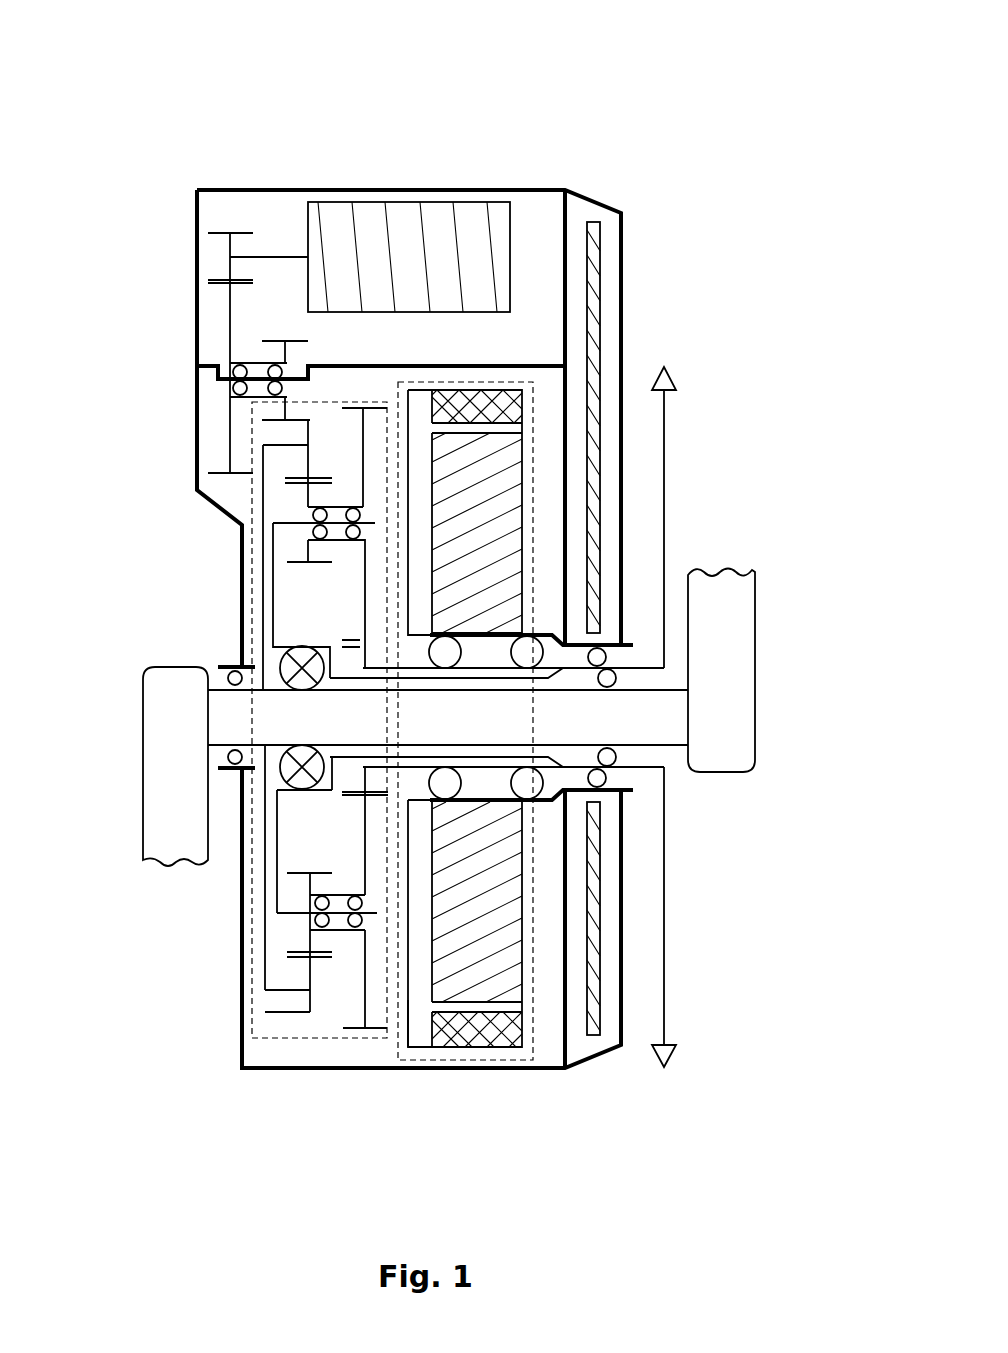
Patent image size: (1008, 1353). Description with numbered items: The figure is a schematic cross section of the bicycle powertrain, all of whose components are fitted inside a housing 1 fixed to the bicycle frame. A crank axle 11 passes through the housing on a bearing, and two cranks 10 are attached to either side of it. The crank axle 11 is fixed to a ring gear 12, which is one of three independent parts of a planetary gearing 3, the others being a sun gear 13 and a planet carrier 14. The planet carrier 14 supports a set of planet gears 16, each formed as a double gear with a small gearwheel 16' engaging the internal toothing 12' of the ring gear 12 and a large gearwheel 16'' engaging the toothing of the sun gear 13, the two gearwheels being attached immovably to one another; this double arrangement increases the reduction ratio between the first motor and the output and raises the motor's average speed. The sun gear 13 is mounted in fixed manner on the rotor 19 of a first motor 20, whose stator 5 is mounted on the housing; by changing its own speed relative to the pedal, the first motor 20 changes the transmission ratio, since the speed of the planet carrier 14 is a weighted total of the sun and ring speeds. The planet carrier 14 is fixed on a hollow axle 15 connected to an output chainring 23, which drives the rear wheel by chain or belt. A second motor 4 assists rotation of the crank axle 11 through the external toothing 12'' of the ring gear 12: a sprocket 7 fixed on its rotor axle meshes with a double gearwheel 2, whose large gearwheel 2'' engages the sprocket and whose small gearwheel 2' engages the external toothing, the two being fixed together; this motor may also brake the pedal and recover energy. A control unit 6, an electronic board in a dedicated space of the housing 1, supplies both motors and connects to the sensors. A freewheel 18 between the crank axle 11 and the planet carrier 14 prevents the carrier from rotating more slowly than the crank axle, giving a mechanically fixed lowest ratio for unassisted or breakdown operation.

The housing 1 is at (530, 192).
The double gearwheel 2 is at (206, 378).
The small gearwheel 2' is at (212, 325).
The large gearwheel 2'' is at (171, 489).
The planetary gearing 3 is at (252, 802).
The second motor 4 is at (408, 228).
The stator 5 is at (520, 888).
The control unit 6 is at (598, 313).
The sprocket 7 is at (217, 232).
The crank 10 is at (722, 648).
The crank axle 11 is at (653, 747).
The ring gear 12 is at (216, 567).
The internal toothing 12' is at (246, 1024).
The external toothing 12'' is at (205, 452).
The sun gear 13 is at (350, 800).
The planet carrier 14 is at (275, 590).
The axle 15 is at (543, 677).
The planet gear 16 is at (288, 1068).
The small gearwheel 16' is at (222, 956).
The large gearwheel 16'' is at (314, 1121).
The freewheel 18 is at (283, 777).
The rotor 19 is at (408, 1015).
The first motor 20 is at (533, 1052).
The output chainring 23 is at (670, 412).